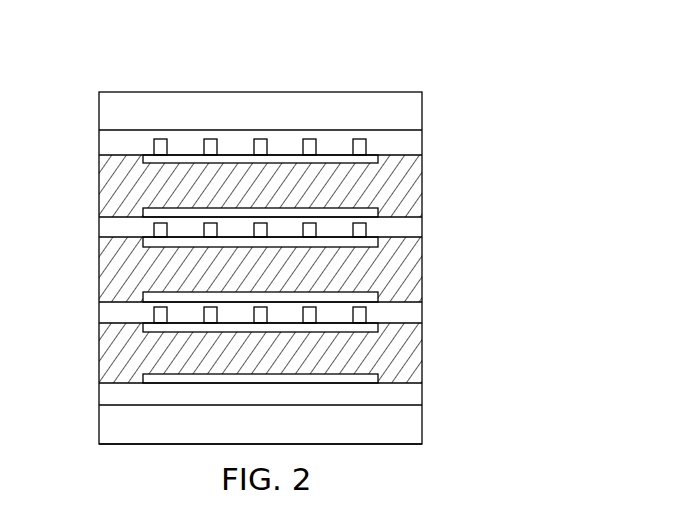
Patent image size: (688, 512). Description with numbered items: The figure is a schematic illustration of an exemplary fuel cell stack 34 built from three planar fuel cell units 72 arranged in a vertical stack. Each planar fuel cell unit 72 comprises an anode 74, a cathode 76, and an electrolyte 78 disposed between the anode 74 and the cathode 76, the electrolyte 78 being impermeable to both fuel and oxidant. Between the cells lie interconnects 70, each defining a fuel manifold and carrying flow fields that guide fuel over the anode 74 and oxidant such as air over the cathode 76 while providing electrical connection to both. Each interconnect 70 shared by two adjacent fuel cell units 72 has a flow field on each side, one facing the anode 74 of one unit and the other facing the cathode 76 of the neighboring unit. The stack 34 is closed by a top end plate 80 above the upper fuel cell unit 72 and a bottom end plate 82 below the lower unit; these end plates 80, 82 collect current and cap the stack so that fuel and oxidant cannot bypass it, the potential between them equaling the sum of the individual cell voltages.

The fuel cell stack 34 is at (458, 66).
The top end plate 80 is at (408, 104).
The interconnect 70 is at (410, 142).
The electrolyte 78 is at (412, 177).
The anode 74 is at (150, 162).
The cathode 76 is at (150, 243).
The planar fuel cell unit 72 is at (492, 298).
The bottom end plate 82 is at (408, 427).